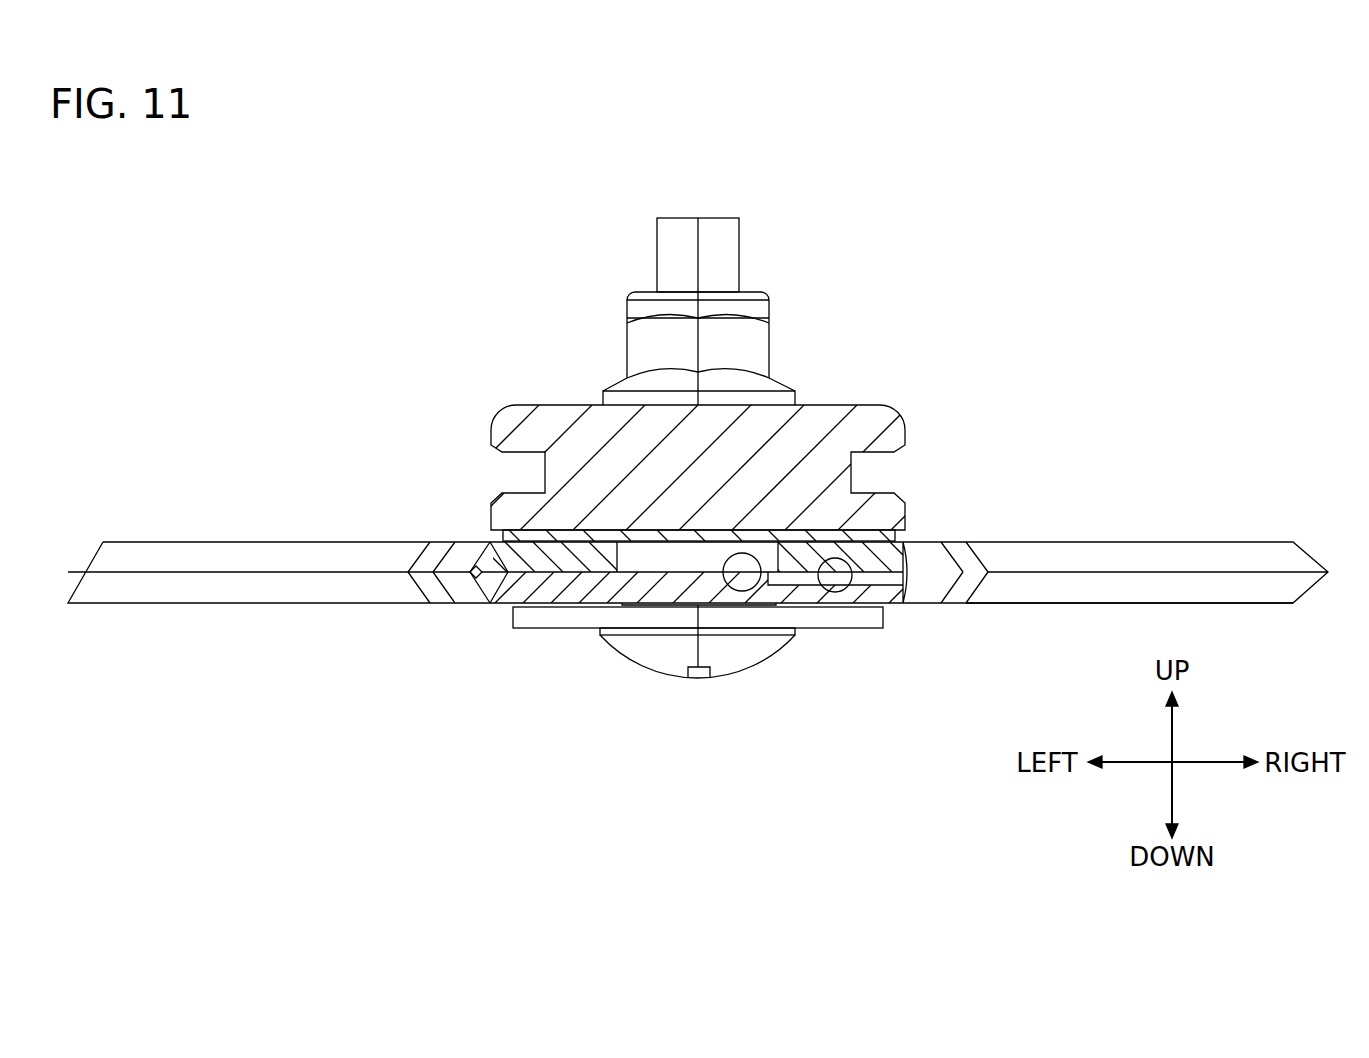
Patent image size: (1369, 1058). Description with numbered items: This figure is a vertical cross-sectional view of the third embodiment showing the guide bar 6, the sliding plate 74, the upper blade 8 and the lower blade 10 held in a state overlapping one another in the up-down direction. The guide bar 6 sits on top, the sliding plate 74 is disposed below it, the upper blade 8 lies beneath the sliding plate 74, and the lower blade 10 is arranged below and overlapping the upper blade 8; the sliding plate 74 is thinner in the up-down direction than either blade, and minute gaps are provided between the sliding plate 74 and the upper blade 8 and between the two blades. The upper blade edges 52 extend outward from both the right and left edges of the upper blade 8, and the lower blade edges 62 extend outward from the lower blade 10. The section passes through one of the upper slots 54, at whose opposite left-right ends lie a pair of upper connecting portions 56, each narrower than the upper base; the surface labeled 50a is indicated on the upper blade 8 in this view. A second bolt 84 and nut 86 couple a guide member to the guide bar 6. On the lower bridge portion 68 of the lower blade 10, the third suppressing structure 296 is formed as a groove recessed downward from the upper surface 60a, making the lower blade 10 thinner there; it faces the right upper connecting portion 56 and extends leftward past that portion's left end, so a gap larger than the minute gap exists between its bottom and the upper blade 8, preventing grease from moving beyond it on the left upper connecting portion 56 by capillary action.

The guide bar 6 is at (503, 423).
The upper blade 8 is at (476, 563).
The lower blade 10 is at (476, 581).
The upper blade edges 52 is at (132, 550).
The upper slots 54 is at (635, 548).
The upper connecting portions 56 is at (553, 548).
The hole 50a is at (824, 561).
The upper surface 60a is at (736, 590).
The lower blade edges 62 is at (132, 594).
The lower bridge portion 68 is at (588, 592).
The sliding plate 74 is at (515, 537).
The second bolts 84 is at (665, 664).
The nuts 86 is at (636, 311).
The third suppressing structure 296 is at (890, 582).